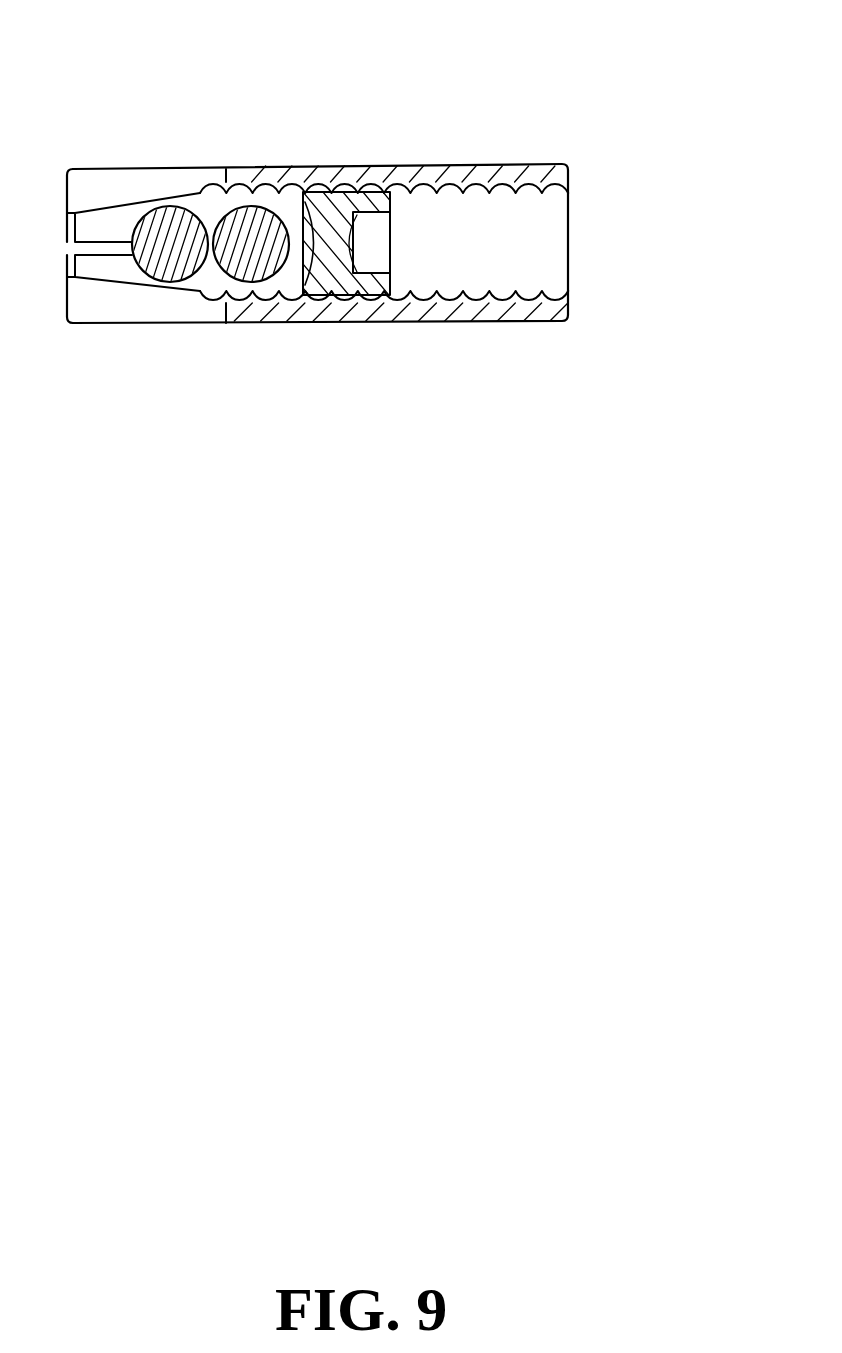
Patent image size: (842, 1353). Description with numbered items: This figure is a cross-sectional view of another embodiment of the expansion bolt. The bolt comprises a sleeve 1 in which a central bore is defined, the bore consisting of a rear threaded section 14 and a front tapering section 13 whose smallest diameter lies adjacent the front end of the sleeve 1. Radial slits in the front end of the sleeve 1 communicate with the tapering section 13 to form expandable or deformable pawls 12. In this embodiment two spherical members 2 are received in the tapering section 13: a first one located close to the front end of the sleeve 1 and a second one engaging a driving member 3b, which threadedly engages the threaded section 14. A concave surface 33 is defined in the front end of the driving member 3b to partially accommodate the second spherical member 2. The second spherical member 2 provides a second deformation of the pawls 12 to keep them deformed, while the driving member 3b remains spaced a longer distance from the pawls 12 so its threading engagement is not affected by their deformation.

The sleeve 1 is at (377, 164).
The spherical member 2 is at (240, 212).
The driving member 3b is at (343, 277).
The pawl 12 is at (167, 180).
The tapering section 13 is at (110, 268).
The threaded section 14 is at (477, 290).
The concave surface 33 is at (283, 198).